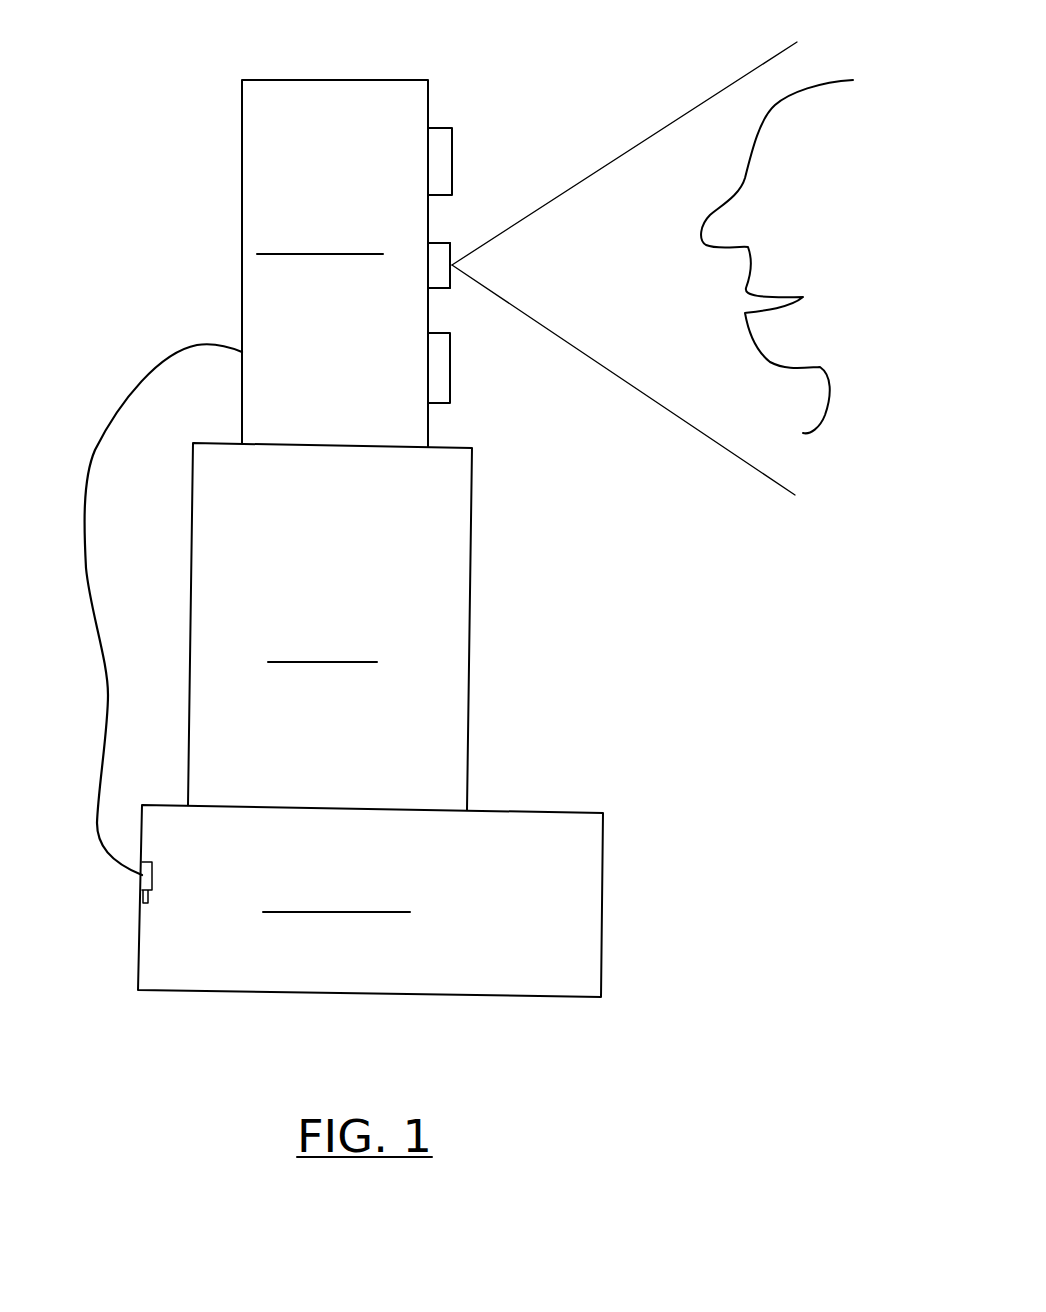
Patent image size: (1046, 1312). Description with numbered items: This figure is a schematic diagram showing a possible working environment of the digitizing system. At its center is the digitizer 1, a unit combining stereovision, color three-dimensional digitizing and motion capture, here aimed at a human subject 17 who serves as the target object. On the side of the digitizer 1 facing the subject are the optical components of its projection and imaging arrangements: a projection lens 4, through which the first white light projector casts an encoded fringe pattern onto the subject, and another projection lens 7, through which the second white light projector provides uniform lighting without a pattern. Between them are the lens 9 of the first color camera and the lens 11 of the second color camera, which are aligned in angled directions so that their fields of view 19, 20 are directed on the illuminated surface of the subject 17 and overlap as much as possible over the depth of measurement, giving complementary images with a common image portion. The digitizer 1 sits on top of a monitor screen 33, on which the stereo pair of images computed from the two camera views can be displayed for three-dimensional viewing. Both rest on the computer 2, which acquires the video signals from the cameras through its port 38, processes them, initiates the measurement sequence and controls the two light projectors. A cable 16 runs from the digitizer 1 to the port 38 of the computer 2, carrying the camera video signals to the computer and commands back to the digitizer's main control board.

The digitizer 1 is at (267, 115).
The computer 2 is at (255, 968).
The projection lens 4 is at (442, 147).
The projection lens 7 is at (438, 393).
The lens 9 is at (443, 280).
The lens 11 is at (501, 317).
The cable 16 is at (193, 343).
The human subject 17 is at (805, 130).
The field of view 19 is at (635, 202).
The field of view 20 is at (647, 372).
The monitor screen 33 is at (423, 560).
The port 38 is at (142, 896).